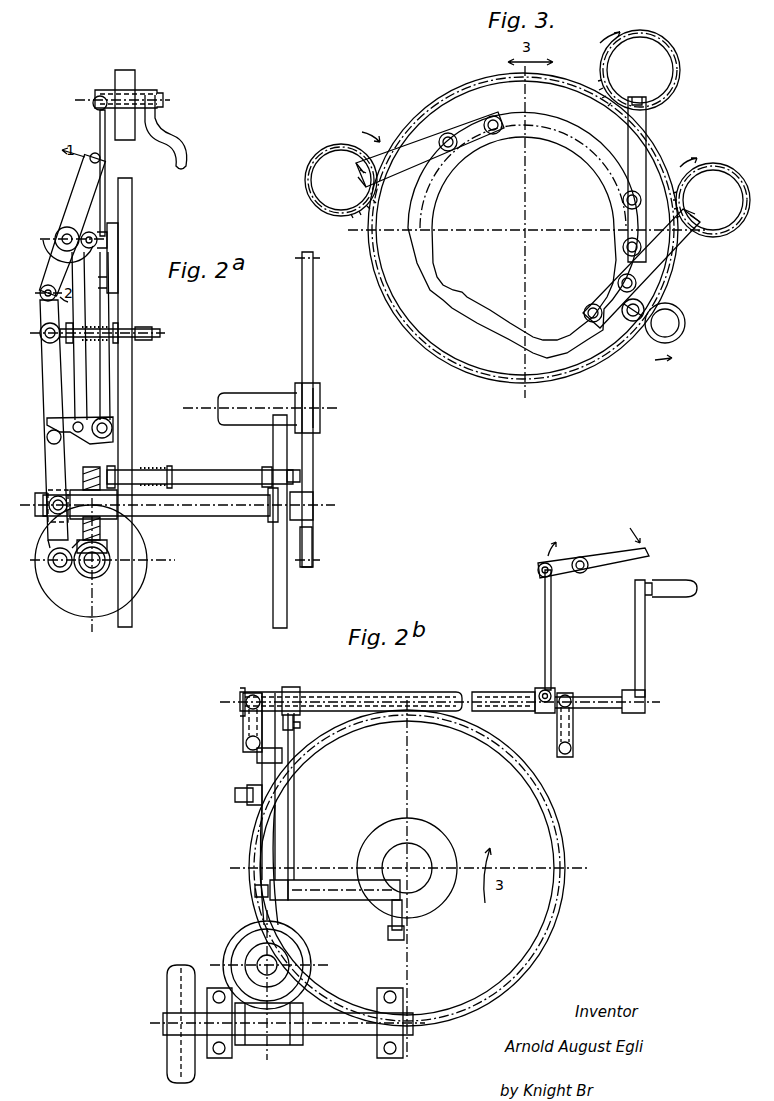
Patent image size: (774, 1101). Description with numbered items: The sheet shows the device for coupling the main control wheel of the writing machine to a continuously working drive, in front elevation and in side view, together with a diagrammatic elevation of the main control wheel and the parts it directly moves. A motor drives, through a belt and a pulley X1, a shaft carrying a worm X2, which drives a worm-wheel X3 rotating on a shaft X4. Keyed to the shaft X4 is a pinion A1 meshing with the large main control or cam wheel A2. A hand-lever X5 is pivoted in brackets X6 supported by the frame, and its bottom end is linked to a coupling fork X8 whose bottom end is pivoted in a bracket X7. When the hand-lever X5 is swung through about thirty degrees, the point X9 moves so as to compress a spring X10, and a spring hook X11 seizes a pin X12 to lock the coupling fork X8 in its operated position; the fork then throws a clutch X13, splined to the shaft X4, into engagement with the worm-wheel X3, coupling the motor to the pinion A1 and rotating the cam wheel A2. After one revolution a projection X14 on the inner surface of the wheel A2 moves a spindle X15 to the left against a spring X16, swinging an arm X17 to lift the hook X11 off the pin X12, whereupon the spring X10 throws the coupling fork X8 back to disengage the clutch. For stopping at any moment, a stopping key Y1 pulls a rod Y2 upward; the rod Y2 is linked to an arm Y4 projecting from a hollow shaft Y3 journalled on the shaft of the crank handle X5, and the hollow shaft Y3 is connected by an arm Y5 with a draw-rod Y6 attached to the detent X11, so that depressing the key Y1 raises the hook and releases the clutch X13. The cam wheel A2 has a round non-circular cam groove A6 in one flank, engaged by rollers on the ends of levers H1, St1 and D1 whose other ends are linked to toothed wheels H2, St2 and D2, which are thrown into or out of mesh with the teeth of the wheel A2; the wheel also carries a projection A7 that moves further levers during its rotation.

In FIG. 3, the pinion A1 is at (677, 335).
In FIG. 2A, the pinion A1 is at (303, 520).
In FIG. 3, the main control wheel or cam wheel A2 is at (560, 385).
In FIG. 2A, the main control wheel or cam wheel A2 is at (303, 313).
In FIG. 2B, the main control wheel or cam wheel A2 is at (500, 993).
In FIG. 3, the cam groove A6 is at (558, 348).
In FIG. 3, the projection A7 is at (633, 321).
In FIG. 3, the lever D1 is at (405, 152).
In FIG. 3, the toothed wheel D2 is at (343, 203).
In FIG. 3, the lever St1 is at (635, 142).
In FIG. 3, the toothed wheel St2 is at (648, 53).
In FIG. 3, the lever H1 is at (662, 260).
In FIG. 3, the toothed wheel H2 is at (720, 227).
In FIG. 2A, the pulley X1 is at (68, 603).
In FIG. 2B, the pulley X1 is at (187, 1060).
In FIG. 2A, the worm X2 is at (92, 573).
In FIG. 2B, the worm X2 is at (268, 1045).
In FIG. 2A, the worm-wheel X3 is at (82, 473).
In FIG. 2B, the worm-wheel X3 is at (305, 950).
In FIG. 2A, the shaft X4 is at (210, 510).
In FIG. 2B, the shaft X4 is at (260, 950).
In FIG. 2A, the hand-lever X5 is at (78, 200).
In FIG. 2B, the hand-lever X5 is at (645, 647).
In FIG. 2A, the brackets X6 is at (75, 260).
In FIG. 2B, the brackets X6 is at (245, 725).
In FIG. 2A, the bracket X7 is at (53, 568).
In FIG. 2B, the bracket X7 is at (297, 1028).
In FIG. 2A, the coupling fork X8 is at (50, 385).
In FIG. 2B, the coupling fork X8 is at (278, 850).
In FIG. 2A, the point X9 is at (43, 296).
In FIG. 2A, the spring X10 is at (100, 327).
In FIG. 2B, the spring X10 is at (247, 787).
In FIG. 2A, the spring hook X11 is at (50, 424).
In FIG. 2B, the spring hook X11 is at (287, 902).
In FIG. 2A, the pin X12 is at (50, 440).
In FIG. 2B, the pin X12 is at (262, 890).
In FIG. 2A, the clutch X13 is at (58, 517).
In FIG. 2A, the projection X14 is at (300, 477).
In FIG. 2B, the projection X14 is at (393, 941).
In FIG. 2A, the spindle X15 is at (208, 475).
In FIG. 2A, the spring X16 is at (150, 468).
In FIG. 2A, the arm X17 is at (100, 447).
In FIG. 2B, the arm X17 is at (403, 893).
In FIG. 2A, the stopping lever or key Y1 is at (175, 168).
In FIG. 2B, the stopping lever or key Y1 is at (597, 560).
In FIG. 2A, the rod Y2 is at (103, 178).
In FIG. 2B, the rod Y2 is at (552, 643).
In FIG. 2B, the hollow shaft Y3 is at (442, 693).
In FIG. 2B, the arm Y4 is at (538, 692).
In FIG. 2A, the arm Y5 is at (88, 223).
In FIG. 2B, the arm Y5 is at (300, 692).
In FIG. 2A, the draw-rod Y6 is at (82, 388).
In FIG. 2B, the draw-rod Y6 is at (294, 815).